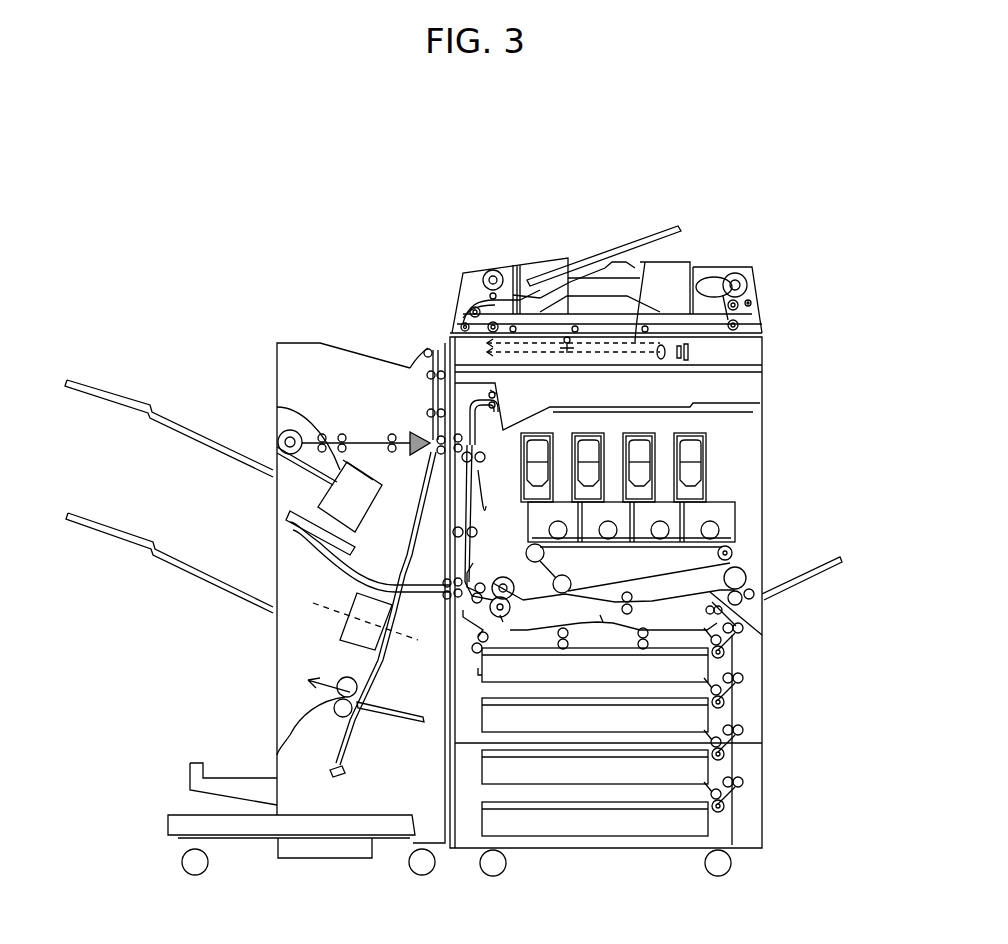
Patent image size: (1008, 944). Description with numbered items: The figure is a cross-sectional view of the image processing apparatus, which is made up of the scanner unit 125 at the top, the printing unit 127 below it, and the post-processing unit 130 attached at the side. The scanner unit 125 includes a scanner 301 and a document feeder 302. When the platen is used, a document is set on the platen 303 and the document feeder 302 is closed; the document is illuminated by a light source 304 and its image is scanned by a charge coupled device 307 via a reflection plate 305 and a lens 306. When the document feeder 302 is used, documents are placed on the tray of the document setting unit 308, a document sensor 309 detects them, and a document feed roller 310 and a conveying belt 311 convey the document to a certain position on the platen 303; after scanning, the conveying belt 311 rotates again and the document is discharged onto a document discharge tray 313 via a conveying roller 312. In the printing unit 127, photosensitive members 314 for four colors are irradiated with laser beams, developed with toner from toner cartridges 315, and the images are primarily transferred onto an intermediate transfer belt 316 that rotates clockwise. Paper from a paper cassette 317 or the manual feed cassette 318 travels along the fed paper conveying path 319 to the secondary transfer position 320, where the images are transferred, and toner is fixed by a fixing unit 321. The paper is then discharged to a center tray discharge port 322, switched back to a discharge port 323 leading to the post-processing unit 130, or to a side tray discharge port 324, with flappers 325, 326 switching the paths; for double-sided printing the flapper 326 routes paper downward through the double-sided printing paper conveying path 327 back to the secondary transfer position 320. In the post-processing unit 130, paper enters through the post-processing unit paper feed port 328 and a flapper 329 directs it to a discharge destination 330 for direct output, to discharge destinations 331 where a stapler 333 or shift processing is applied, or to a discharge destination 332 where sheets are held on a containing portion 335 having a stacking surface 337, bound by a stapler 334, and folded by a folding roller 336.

The scanner unit 125 is at (762, 334).
The printing unit 127 is at (762, 806).
The post-processing unit 130 is at (277, 343).
The scanner 301 is at (762, 362).
The document feeder 302 is at (458, 297).
The platen 303 is at (645, 262).
The light source 304 is at (570, 346).
The reflection plate 305 is at (452, 340).
The lens 306 is at (661, 359).
The charge coupled device 307 is at (665, 353).
The document setting unit 308 is at (590, 276).
The document sensor 309 is at (537, 268).
The document feed roller 310 is at (488, 271).
The conveying belt 311 is at (575, 258).
The conveying roller 312 is at (752, 283).
The document discharge tray 313 is at (645, 260).
The photosensitive members 314 is at (560, 530).
The toner cartridges 315 is at (540, 472).
The intermediate transfer belt 316 is at (750, 557).
The paper cassette 317 is at (663, 672).
The manual feed cassette 318 is at (803, 580).
The fed paper conveying path 319 is at (732, 708).
The secondary transfer position 320 is at (513, 601).
The fixing unit 321 is at (503, 622).
The center tray discharge port 322 is at (494, 402).
The discharge port 323 is at (486, 506).
The side tray discharge port 324 is at (327, 570).
The flapper 325 is at (476, 437).
The flapper 326 is at (290, 522).
The double-sided printing paper conveying path 327 is at (603, 622).
The post-processing unit paper feed port 328 is at (425, 350).
The flapper 329 is at (428, 440).
The discharge destination 330 is at (333, 343).
The discharge destinations 331 is at (147, 535).
The discharge destination 332 is at (232, 778).
The stapler 333 is at (273, 407).
The stapler 334 is at (353, 632).
The containing portion 335 is at (345, 770).
The folding roller 336 is at (340, 713).
The stacking surface 337 is at (353, 740).